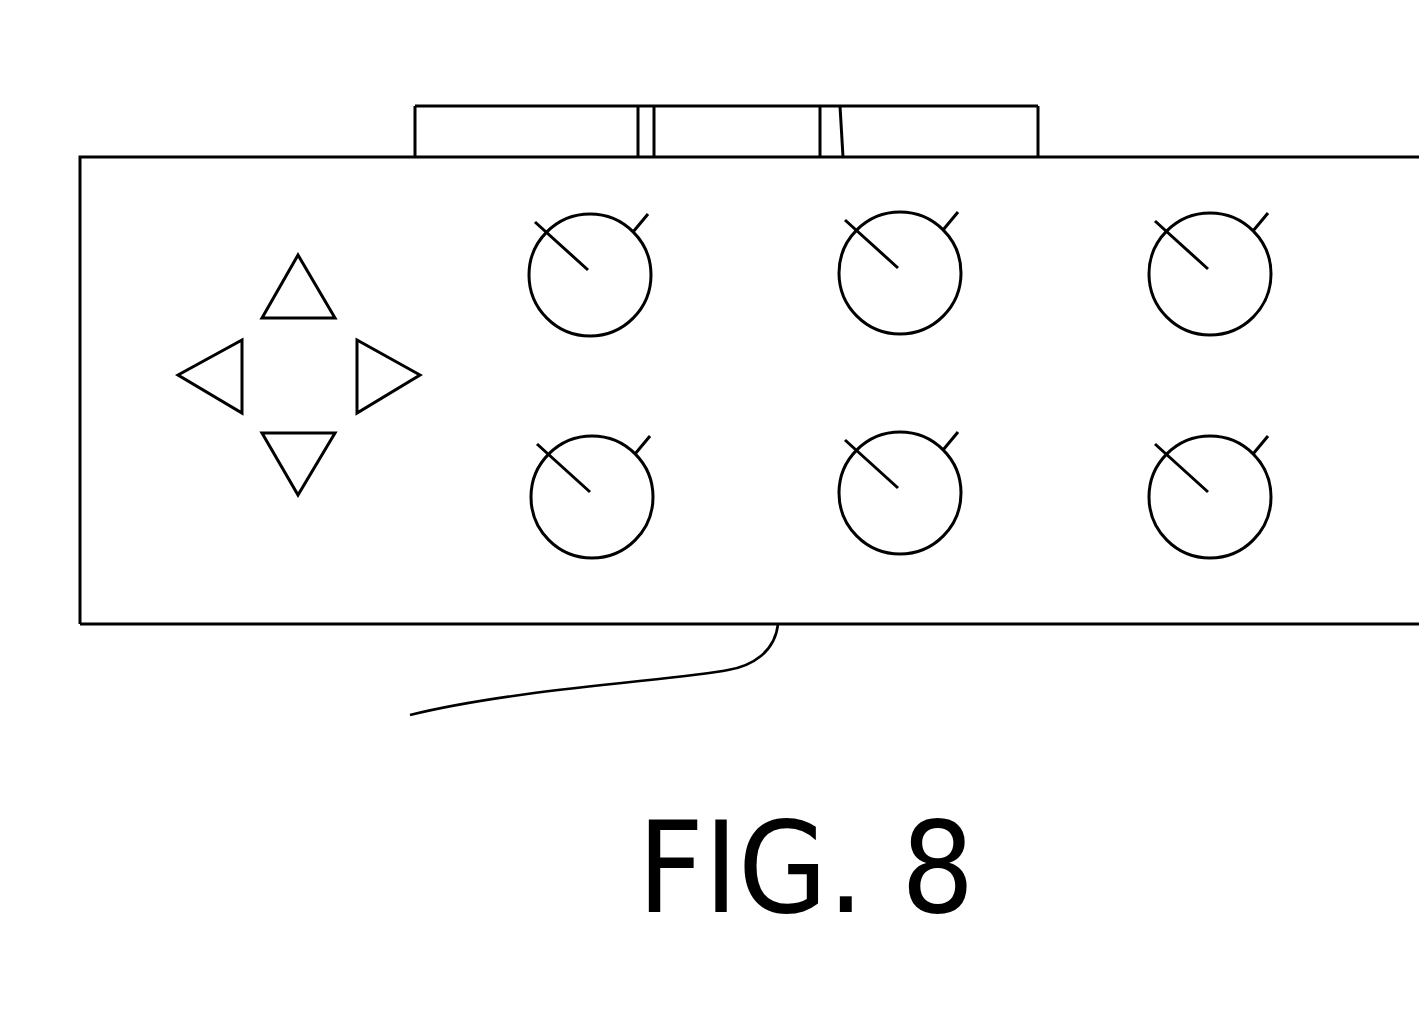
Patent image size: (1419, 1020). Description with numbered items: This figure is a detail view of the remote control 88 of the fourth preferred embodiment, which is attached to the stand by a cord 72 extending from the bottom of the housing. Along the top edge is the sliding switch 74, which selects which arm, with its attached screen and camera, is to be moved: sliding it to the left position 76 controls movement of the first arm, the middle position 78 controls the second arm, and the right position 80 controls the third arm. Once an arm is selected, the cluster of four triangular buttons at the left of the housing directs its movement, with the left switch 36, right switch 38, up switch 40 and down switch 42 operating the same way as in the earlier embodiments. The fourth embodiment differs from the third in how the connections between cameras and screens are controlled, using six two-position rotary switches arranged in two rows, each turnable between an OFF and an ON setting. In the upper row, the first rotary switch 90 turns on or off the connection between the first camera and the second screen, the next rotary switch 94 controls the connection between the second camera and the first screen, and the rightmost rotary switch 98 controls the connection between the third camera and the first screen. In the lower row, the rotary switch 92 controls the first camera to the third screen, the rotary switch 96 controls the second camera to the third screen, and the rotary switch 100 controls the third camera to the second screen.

The remote control 88 is at (206, 156).
The cord 72 is at (728, 670).
The sliding switch 74 is at (705, 106).
The left position 76 is at (492, 105).
The middle position 78 is at (778, 106).
The right position 80 is at (923, 106).
The up switch 40 is at (318, 282).
The left switch 36 is at (210, 353).
The right switch 38 is at (387, 352).
The down switch 42 is at (278, 467).
The rotary switch 1-2 90 is at (653, 282).
The rotary switch 2-1 94 is at (962, 280).
The rotary switch 3-1 98 is at (1267, 302).
The rotary switch 1-3 92 is at (655, 517).
The rotary switch 2-3 96 is at (962, 498).
The rotary switch 3-2 100 is at (1270, 513).